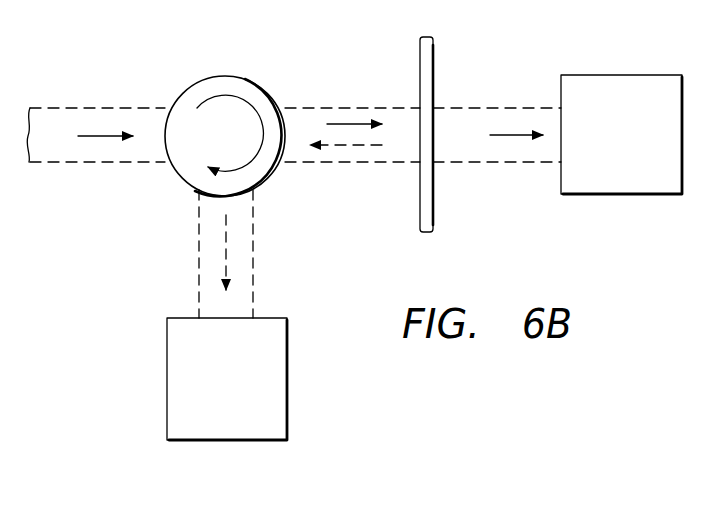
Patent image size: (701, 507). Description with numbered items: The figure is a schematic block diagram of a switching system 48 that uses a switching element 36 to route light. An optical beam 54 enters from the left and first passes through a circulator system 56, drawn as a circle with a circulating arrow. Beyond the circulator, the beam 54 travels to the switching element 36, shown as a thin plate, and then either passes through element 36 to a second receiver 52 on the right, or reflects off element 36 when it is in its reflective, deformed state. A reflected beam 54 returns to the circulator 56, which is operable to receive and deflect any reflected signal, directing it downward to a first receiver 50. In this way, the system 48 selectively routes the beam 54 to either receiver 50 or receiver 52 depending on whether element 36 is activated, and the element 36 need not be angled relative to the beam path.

The switching system 48 is at (109, 74).
The optical beam 54 is at (80, 163).
The circulator system 56 is at (222, 77).
The switching element 36 is at (434, 74).
The second receiver 52 is at (621, 75).
The first receiver 50 is at (167, 380).